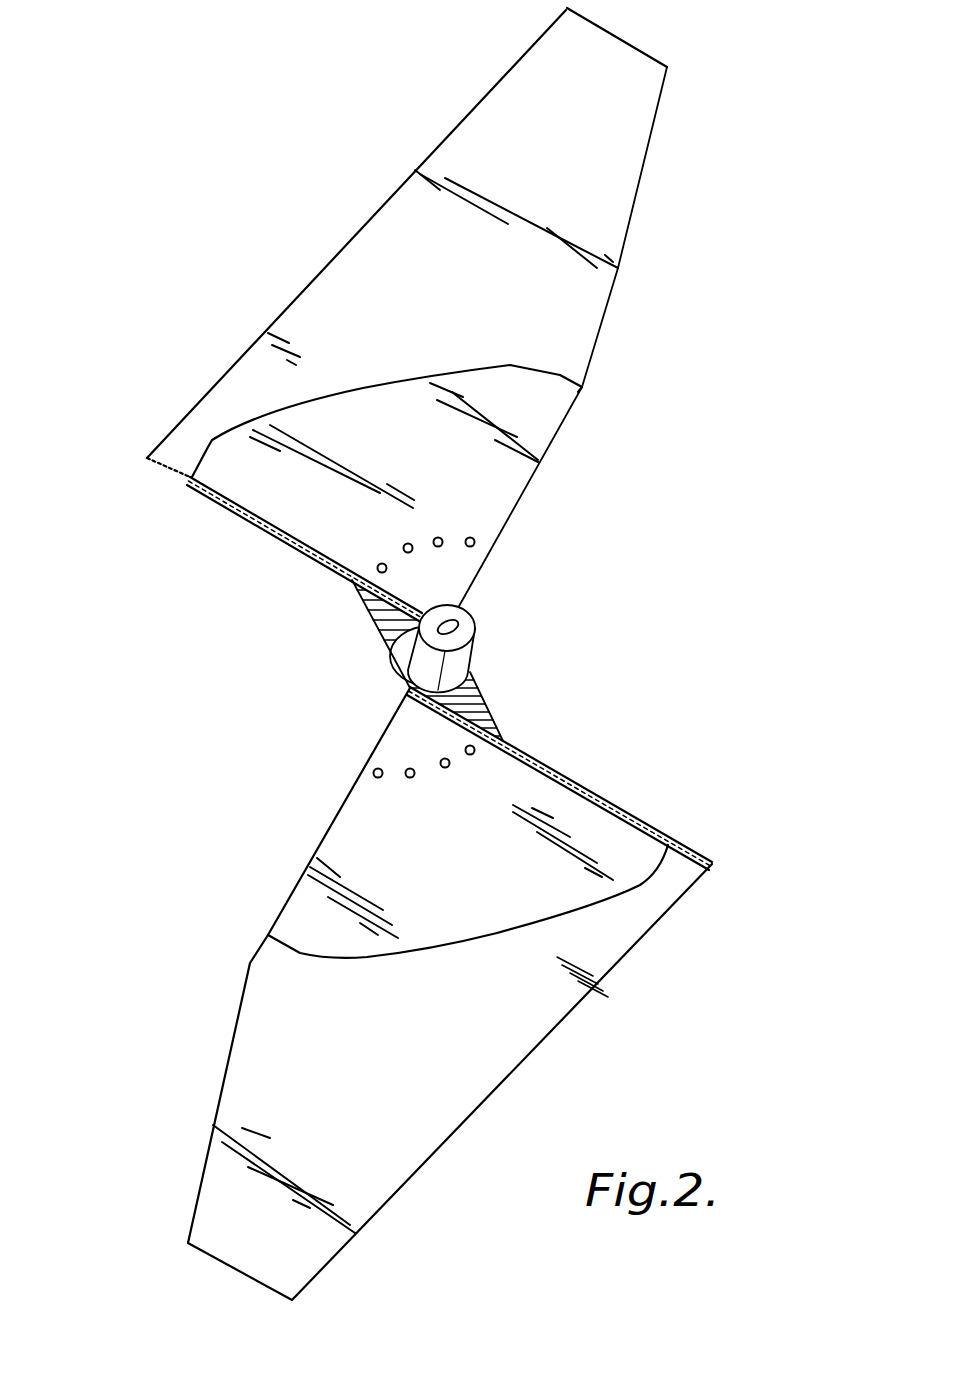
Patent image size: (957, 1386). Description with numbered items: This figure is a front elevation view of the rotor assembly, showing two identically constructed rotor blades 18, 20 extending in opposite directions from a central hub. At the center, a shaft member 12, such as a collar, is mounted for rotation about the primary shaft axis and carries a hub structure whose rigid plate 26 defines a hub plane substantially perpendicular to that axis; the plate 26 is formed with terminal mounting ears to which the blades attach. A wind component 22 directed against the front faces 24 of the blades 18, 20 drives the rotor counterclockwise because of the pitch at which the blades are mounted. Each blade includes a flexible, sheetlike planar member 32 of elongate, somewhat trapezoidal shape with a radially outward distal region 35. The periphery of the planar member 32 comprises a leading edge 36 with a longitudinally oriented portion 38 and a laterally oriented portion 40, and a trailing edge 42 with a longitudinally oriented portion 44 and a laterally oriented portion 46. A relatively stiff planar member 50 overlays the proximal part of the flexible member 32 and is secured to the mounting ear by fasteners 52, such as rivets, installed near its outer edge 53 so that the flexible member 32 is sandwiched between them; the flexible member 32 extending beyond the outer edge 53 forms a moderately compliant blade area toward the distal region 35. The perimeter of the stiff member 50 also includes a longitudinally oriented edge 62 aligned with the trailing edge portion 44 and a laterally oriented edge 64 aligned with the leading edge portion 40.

The shaft member 12 is at (330, 578).
The rotor blade 18 is at (640, 268).
The rotor blade 20 is at (214, 971).
The wind component 22 is at (684, 481).
The front face 24 is at (367, 275).
The rigid plate 26 is at (477, 696).
The flexible planar member 32 is at (580, 343).
The distal region 35 is at (518, 55).
The leading edge 36 is at (442, 133).
The longitudinally oriented portion of leading edge 38 is at (390, 195).
The laterally oriented portion of leading edge 40 is at (213, 495).
The trailing edge 42 is at (640, 224).
The longitudinally oriented portion of trailing edge 44 is at (590, 373).
The laterally oriented portion of trailing edge 46 is at (597, 25).
The stiff planar member 50 is at (515, 493).
The fasteners 52 is at (476, 542).
The outer edge of stiff member 53 is at (336, 388).
The longitudinally oriented edge of stiff member 62 is at (549, 447).
The laterally oriented edge of stiff member 64 is at (232, 509).